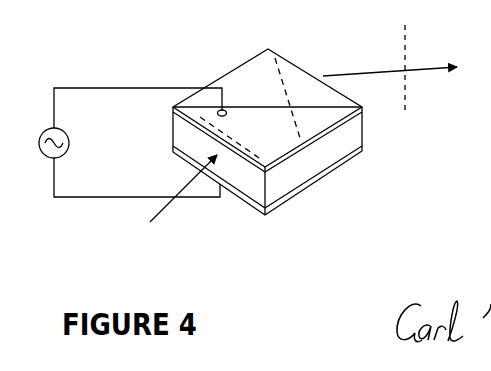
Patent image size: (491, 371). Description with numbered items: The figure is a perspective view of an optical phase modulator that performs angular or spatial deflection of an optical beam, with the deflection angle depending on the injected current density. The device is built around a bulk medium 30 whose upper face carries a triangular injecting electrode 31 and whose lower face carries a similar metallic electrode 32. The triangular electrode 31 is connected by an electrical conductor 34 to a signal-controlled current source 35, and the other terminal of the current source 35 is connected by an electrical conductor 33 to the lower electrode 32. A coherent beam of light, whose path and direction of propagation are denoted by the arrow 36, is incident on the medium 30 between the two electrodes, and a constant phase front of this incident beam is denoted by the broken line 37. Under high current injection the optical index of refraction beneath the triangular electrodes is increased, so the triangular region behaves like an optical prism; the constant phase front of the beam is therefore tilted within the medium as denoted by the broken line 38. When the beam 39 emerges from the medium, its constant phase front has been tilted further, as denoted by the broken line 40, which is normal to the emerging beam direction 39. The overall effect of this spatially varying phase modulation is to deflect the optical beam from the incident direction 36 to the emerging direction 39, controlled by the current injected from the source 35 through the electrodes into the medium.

The bulk medium 30 is at (267, 160).
The triangular injecting electrode 31 is at (267, 110).
The metallic electrode 32 is at (337, 161).
The electrical conductor 33 is at (137, 188).
The electrical conductor 34 is at (140, 97).
The signal-controlled current source 35 is at (42, 143).
The arrow 36 is at (175, 198).
The broken line 37 is at (245, 152).
The broken line 38 is at (280, 98).
The beam 39 is at (402, 67).
The broken line 40 is at (393, 67).